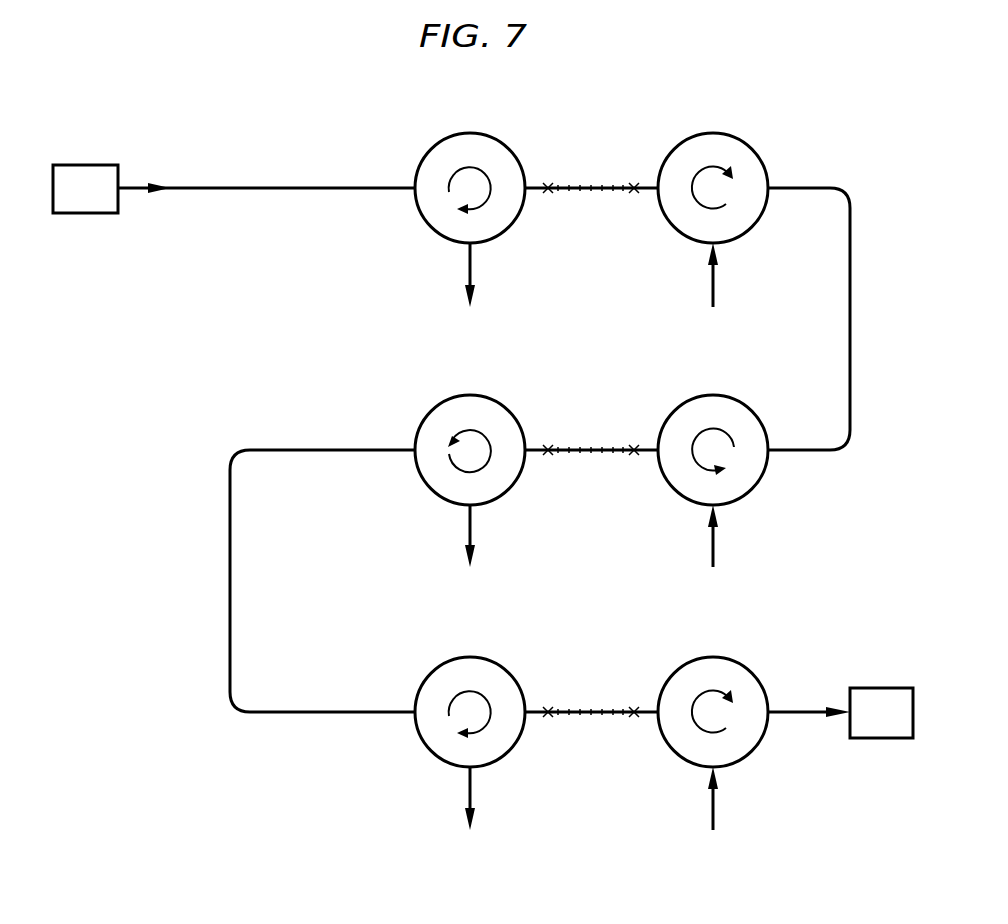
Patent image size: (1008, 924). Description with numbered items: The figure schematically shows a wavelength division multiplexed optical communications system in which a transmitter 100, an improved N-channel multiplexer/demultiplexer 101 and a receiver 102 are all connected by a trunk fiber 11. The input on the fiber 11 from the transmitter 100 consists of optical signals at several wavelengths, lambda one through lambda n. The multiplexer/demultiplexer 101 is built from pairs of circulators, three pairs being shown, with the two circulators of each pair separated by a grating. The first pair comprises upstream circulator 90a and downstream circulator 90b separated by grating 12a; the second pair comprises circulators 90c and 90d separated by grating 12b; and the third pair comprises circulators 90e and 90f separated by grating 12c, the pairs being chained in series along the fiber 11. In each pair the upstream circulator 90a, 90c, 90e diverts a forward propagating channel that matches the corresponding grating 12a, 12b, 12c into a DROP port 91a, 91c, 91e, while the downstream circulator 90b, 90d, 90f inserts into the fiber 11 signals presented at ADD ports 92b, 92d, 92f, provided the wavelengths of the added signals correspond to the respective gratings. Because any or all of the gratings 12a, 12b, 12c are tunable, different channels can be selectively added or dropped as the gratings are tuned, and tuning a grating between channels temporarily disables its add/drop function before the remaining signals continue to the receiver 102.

The transmitter 100 is at (85, 189).
The trunk fiber 11 is at (303, 188).
The N-channel multiplexer/demultiplexer 101 is at (816, 110).
The upstream circulator 90a is at (437, 147).
The downstream circulator 90b is at (673, 147).
The upstream circulator 90c is at (673, 409).
The downstream circulator 90d is at (437, 409).
The upstream circulator 90e is at (437, 671).
The downstream circulator 90f is at (673, 673).
The grating 12a is at (583, 152).
The grating 12b is at (583, 415).
The grating 12c is at (583, 676).
The DROP port 91a is at (472, 290).
The DROP port 91c is at (715, 552).
The DROP port 91e is at (472, 815).
The ADD port 92b is at (715, 289).
The ADD port 92d is at (473, 552).
The ADD port 92f is at (715, 814).
The receiver 102 is at (840, 708).